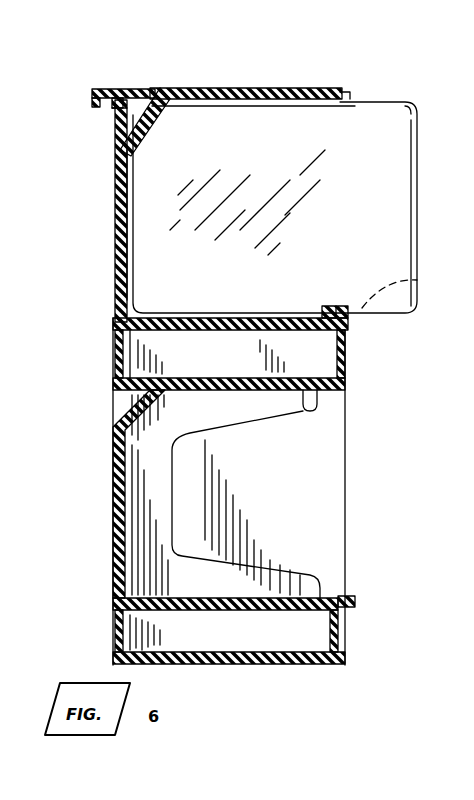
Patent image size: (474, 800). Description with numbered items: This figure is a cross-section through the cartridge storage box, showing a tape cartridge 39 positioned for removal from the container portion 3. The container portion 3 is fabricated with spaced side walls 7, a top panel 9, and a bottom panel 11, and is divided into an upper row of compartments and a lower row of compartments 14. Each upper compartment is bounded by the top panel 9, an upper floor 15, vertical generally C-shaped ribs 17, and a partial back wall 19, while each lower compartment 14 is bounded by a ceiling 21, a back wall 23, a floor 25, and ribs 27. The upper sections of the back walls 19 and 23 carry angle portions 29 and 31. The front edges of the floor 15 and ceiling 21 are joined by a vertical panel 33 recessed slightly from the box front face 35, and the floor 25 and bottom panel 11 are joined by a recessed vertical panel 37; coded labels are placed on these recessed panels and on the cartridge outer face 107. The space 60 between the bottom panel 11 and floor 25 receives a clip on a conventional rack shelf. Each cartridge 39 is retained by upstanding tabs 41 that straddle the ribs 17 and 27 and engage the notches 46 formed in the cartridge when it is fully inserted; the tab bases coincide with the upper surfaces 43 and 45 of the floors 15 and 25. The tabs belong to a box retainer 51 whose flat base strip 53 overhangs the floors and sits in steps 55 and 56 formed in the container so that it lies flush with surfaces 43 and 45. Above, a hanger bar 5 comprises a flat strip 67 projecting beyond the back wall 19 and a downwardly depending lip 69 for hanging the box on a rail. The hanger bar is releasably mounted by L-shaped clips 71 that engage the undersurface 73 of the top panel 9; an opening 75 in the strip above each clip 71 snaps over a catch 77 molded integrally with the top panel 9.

The container portion 3 is at (110, 504).
The hanger bar 5 is at (100, 90).
The side walls 7 is at (270, 480).
The top panel 9 is at (300, 96).
The bottom panel 11 is at (283, 665).
The compartment of lower row 14 is at (327, 488).
The upper floor 15 is at (135, 336).
The C-shaped ribs 17 is at (120, 310).
The partial back wall 19 is at (115, 234).
The ceiling 21 is at (318, 405).
The back wall 23 is at (118, 565).
The floor 25 is at (113, 605).
The ribs 27 is at (130, 466).
The angle portion 29 is at (118, 174).
The angle portion 31 is at (130, 412).
The vertical panel 33 is at (348, 374).
The box front face 35 is at (348, 658).
The recessed vertical panel 37 is at (338, 630).
The tape cartridge 39 is at (400, 207).
The upstanding tabs 41 is at (356, 595).
The upper surface of floor 43 is at (278, 316).
The upper surface of floor 45 is at (204, 597).
The notches 46 is at (416, 290).
The box retainer 51 is at (358, 326).
The base strip 53 is at (342, 316).
The step 55 is at (328, 316).
The step 56 is at (342, 597).
The space 60 is at (213, 638).
The flat strip 67 is at (168, 97).
The lip 69 is at (92, 94).
The L-shaped clips 71 is at (128, 108).
The undersurface 73 is at (145, 116).
The opening 75 is at (118, 90).
The catch 77 is at (145, 92).
The cartridge outer face 107 is at (412, 130).